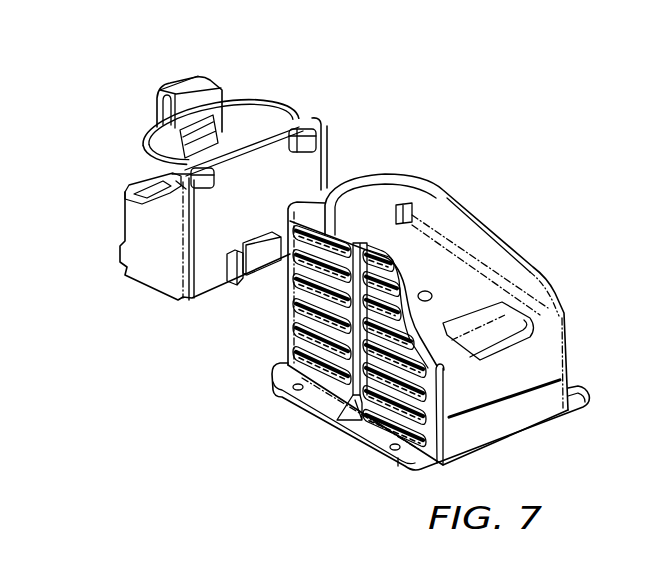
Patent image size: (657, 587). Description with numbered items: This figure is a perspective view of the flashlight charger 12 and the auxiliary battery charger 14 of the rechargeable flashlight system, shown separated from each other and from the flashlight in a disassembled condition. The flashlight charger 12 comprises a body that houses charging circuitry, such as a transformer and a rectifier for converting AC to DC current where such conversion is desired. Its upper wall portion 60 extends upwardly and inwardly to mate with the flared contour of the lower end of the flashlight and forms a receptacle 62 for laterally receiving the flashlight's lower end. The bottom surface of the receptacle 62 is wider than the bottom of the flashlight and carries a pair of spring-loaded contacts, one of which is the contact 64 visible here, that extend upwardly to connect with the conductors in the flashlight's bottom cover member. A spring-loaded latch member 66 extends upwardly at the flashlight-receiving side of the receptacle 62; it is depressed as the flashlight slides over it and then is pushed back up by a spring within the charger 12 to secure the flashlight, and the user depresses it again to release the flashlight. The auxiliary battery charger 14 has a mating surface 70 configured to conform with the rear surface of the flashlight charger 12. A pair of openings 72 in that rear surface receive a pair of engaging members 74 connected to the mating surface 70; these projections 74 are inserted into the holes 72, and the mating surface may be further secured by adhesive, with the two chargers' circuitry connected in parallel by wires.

The flashlight charger 12 is at (402, 476).
The auxiliary battery charger 14 is at (115, 229).
The upper wall portion 60 is at (590, 239).
The receptacle 62 is at (383, 201).
The contact 64 is at (432, 296).
The latch member 66 is at (566, 316).
The mating surface 70 is at (328, 130).
The openings 72 is at (412, 208).
The engaging members 74 is at (177, 180).